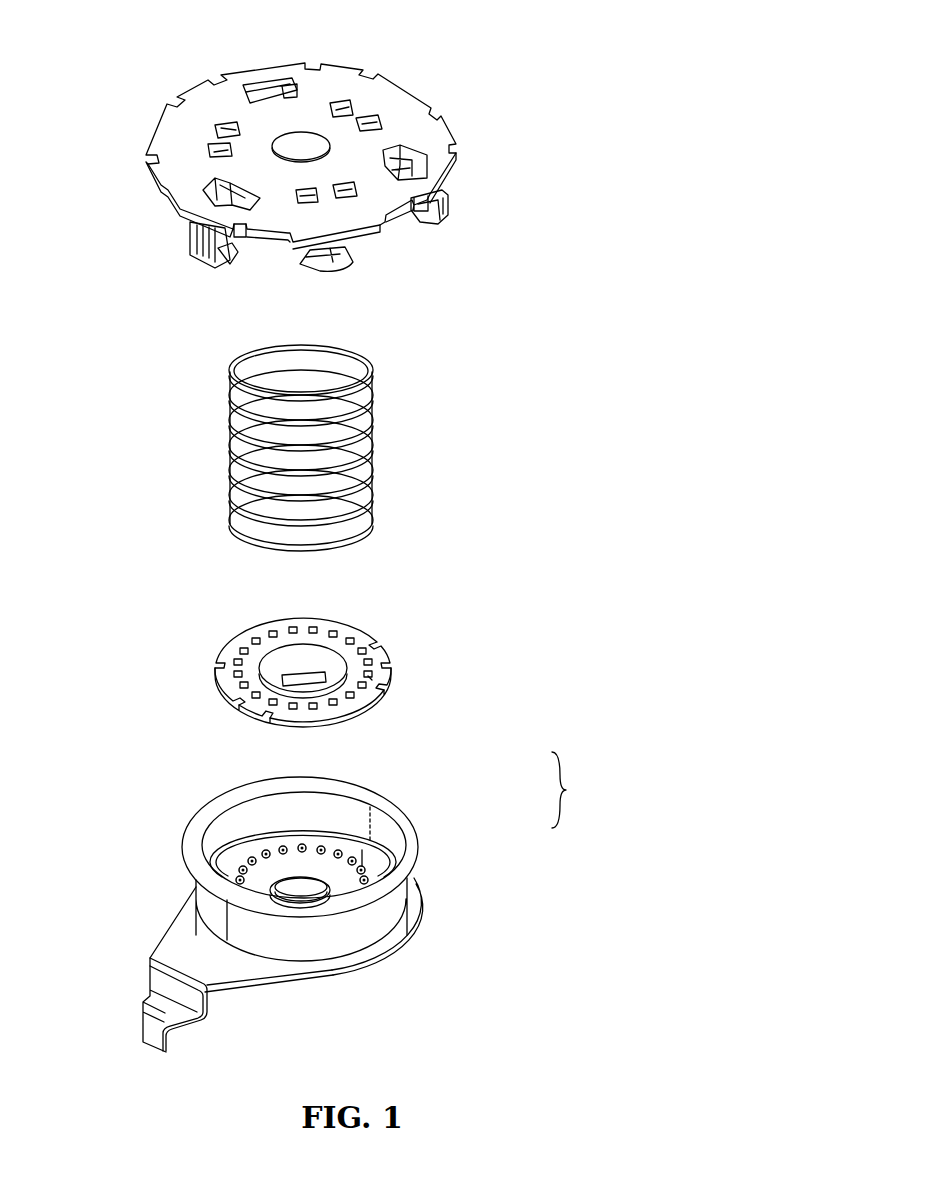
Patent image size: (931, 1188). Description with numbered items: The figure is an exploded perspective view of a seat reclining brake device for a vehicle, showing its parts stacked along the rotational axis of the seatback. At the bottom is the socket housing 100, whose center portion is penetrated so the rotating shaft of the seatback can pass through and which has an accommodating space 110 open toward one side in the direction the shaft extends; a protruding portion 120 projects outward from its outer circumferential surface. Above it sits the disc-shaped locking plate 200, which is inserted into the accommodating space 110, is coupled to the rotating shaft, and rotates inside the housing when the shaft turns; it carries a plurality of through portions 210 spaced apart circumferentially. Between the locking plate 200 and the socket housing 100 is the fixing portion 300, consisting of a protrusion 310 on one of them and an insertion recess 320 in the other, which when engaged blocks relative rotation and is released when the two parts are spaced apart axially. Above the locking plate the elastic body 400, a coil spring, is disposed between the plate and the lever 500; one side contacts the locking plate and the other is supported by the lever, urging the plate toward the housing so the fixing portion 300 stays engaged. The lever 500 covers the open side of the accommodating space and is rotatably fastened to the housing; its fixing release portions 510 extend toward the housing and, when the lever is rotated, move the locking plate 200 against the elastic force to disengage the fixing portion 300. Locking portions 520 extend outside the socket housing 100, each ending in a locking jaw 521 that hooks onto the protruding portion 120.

The socket housing 100 is at (318, 889).
The accommodating space 110 is at (250, 852).
The protruding portion 120 is at (198, 836).
The locking plate 200 is at (305, 646).
The through portion 210 is at (224, 658).
The fixing portion 300 is at (587, 790).
The protrusion 310 is at (402, 818).
The insertion recess 320 is at (370, 678).
The elastic body 400 is at (215, 452).
The lever 500 is at (342, 185).
The fixing release portion 510 is at (345, 265).
The locking portion 520 is at (450, 200).
The locking jaw 521 is at (240, 248).